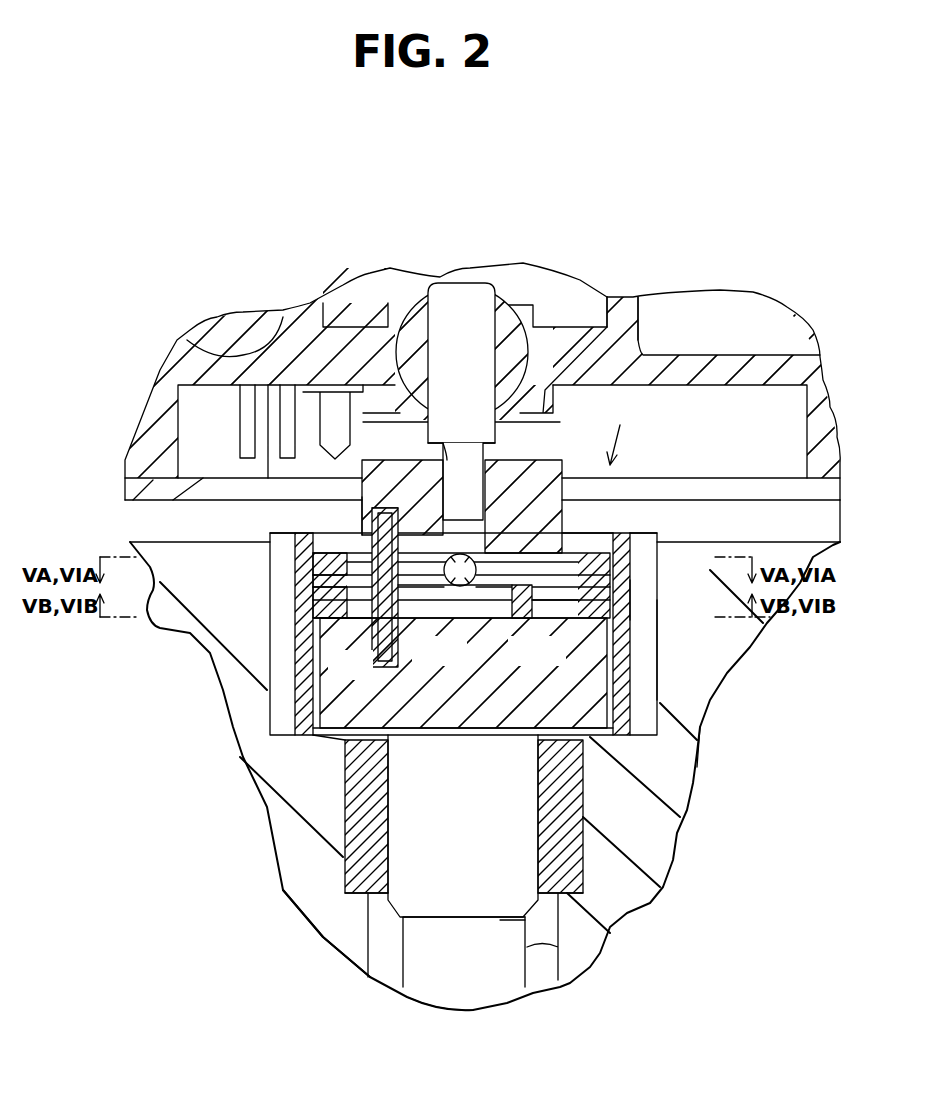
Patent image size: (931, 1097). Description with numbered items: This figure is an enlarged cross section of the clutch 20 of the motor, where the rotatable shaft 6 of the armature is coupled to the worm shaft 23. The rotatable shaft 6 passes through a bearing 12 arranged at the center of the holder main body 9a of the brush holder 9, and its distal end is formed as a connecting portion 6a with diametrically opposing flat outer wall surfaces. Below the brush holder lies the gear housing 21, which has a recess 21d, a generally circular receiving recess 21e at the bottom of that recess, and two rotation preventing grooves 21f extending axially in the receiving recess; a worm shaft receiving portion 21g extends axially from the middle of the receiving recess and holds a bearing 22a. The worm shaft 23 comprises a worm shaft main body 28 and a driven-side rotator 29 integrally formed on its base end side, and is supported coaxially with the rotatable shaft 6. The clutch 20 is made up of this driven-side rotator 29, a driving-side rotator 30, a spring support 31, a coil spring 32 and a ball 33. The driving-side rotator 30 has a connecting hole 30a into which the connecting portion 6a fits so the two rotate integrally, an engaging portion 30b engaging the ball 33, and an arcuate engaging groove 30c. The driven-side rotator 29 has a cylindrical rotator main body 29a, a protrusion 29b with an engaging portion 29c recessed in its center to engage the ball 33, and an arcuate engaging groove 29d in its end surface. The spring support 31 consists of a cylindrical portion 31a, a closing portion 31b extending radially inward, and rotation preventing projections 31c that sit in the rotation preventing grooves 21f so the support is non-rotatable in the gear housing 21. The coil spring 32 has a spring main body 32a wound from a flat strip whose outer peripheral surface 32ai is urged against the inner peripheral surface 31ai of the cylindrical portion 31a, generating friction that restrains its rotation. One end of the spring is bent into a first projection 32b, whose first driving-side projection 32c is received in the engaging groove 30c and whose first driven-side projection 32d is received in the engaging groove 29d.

The rotatable shaft 6 is at (445, 283).
The connecting portion 6a is at (478, 470).
The brush holder 9 is at (720, 355).
The holder main body 9a is at (633, 305).
The bearing 12 is at (519, 330).
The clutch 20 is at (624, 430).
The gear housing 21 is at (665, 848).
The recess 21d is at (777, 542).
The receiving recess 21e is at (655, 650).
The rotation preventing grooves 21f is at (705, 702).
The worm shaft receiving portion 21g is at (372, 940).
The bearing 22a is at (355, 870).
The worm shaft 23 is at (590, 955).
The worm shaft main body 28 is at (430, 992).
The driven-side rotator 29 is at (447, 720).
The rotator main body 29a is at (335, 740).
The protrusion 29b is at (490, 632).
The engaging portion 29c is at (492, 592).
The engaging groove 29d is at (340, 640).
The driving-side rotator 30 is at (540, 470).
The connecting hole 30a is at (447, 458).
The engaging portion 30b is at (470, 562).
The engaging groove 30c is at (392, 520).
The spring support 31 is at (630, 500).
The cylindrical portion 31a is at (640, 607).
The inner peripheral surface 31ai is at (290, 540).
The closing portion 31b is at (565, 540).
The rotation preventing projections 31c is at (655, 530).
The coil spring 32 is at (633, 585).
The spring main body 32a is at (318, 580).
The outer peripheral surface 32ai is at (315, 598).
The first projection 32b is at (430, 470).
The first driving-side projection 32c is at (372, 553).
The first driven-side projection 32d is at (398, 645).
The ball 33 is at (452, 590).